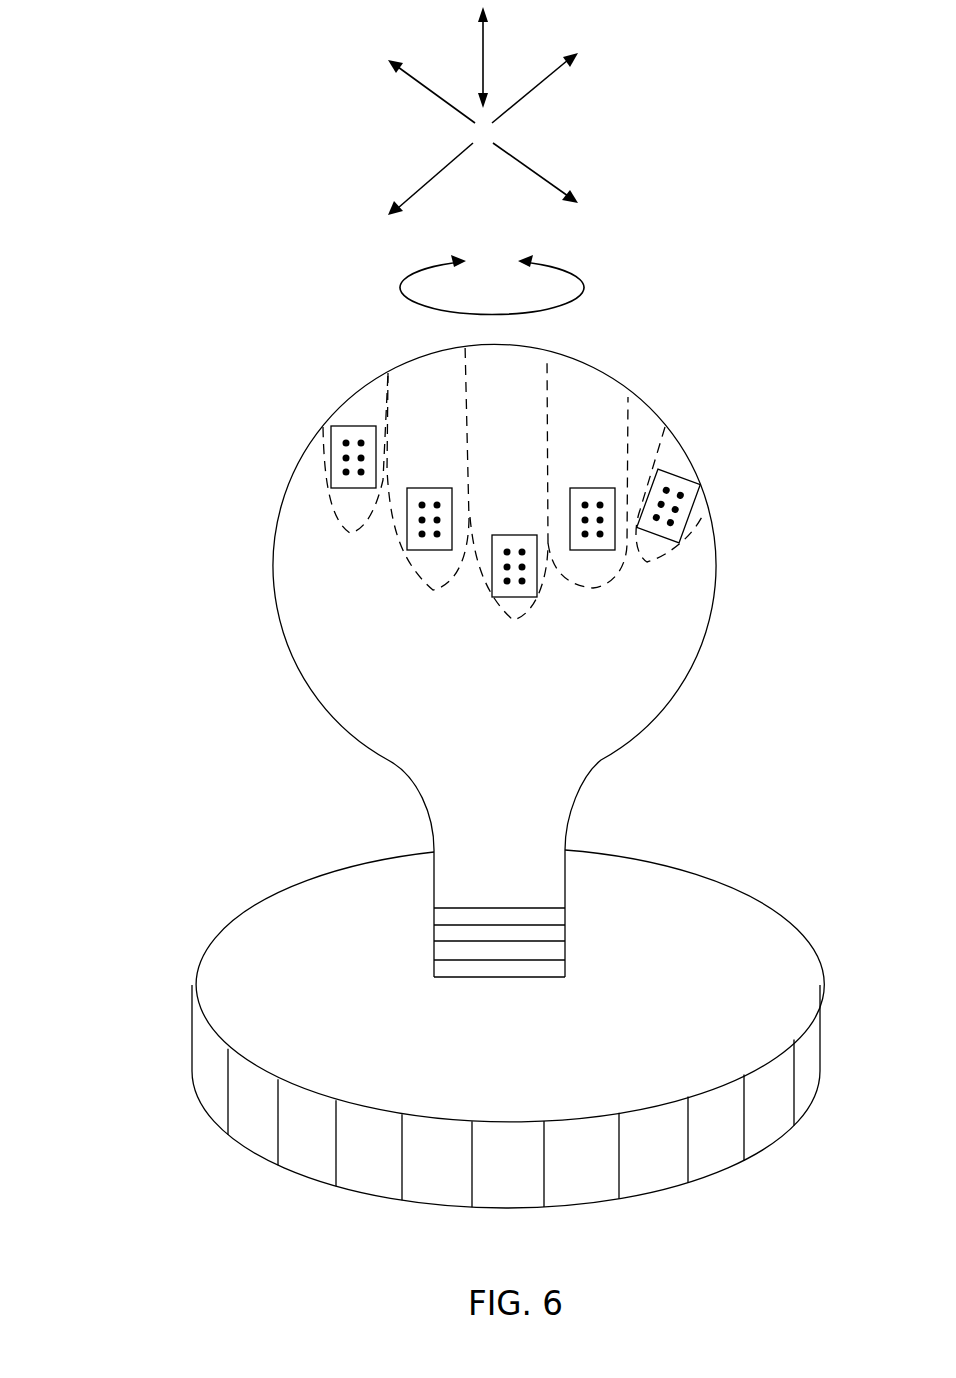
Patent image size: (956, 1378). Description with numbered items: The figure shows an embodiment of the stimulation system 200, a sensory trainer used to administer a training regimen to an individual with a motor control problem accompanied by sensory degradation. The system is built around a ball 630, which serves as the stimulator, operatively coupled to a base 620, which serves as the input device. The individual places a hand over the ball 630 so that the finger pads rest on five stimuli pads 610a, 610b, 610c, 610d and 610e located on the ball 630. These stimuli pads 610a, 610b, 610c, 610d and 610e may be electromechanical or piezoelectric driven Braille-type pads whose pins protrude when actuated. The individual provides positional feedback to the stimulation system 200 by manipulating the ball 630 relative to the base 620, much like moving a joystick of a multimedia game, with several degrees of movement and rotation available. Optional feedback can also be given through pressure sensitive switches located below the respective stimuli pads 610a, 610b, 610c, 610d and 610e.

The stimulation system 200 is at (236, 360).
The stimuli pad 610a is at (653, 542).
The stimuli pad 610b is at (590, 550).
The stimuli pad 610c is at (517, 597).
The stimuli pad 610d is at (433, 550).
The stimuli pad 610e is at (358, 487).
The base 620 is at (706, 875).
The ball 630 is at (695, 665).